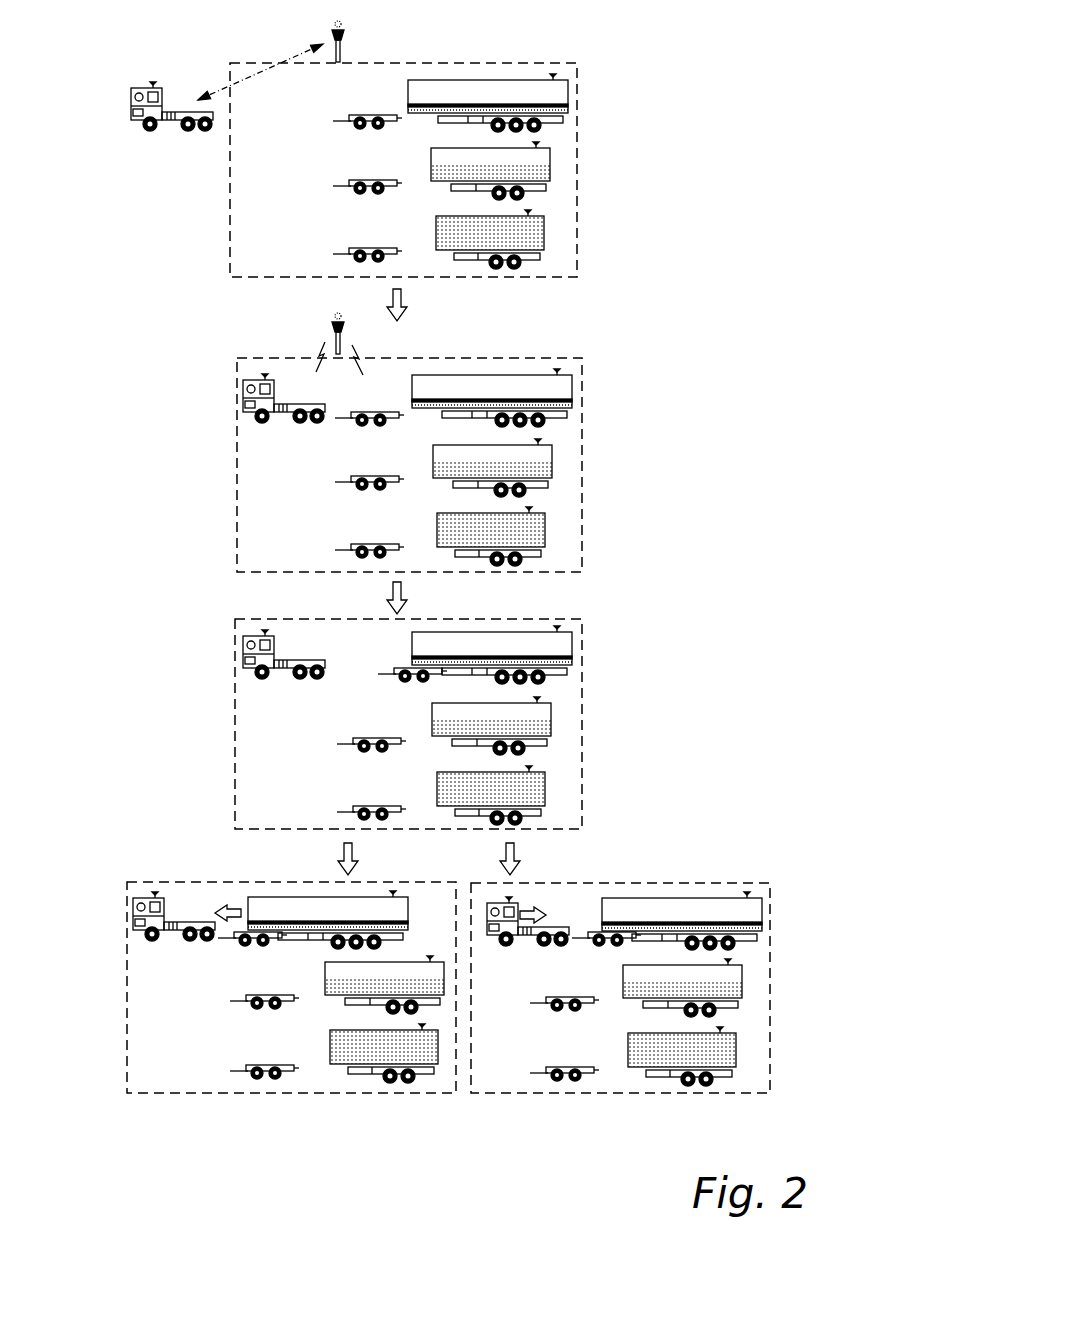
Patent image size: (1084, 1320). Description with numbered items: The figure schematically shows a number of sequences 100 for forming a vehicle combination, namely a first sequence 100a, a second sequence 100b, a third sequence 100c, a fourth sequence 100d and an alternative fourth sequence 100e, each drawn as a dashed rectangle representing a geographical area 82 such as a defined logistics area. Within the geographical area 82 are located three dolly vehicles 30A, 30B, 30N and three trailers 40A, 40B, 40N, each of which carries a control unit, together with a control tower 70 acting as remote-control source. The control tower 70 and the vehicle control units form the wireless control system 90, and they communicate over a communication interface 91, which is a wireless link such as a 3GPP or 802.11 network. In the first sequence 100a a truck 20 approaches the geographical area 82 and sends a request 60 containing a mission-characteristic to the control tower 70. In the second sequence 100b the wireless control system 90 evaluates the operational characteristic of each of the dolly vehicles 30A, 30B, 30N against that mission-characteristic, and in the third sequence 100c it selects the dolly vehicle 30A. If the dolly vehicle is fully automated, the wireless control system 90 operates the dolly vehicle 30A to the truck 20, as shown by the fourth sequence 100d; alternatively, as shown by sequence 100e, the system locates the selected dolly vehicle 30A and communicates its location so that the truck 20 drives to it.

The sequences for forming a vehicle combination 100 is at (611, 35).
The first sequence 100a is at (589, 75).
The second sequence 100b is at (591, 377).
The third sequence 100c is at (591, 635).
The fourth sequence 100d is at (169, 1105).
The alternative fourth sequence 100e is at (784, 888).
The truck 20 is at (172, 131).
The dolly vehicle 30A is at (352, 118).
The dolly vehicle 30B is at (360, 184).
The dolly vehicle 30N is at (360, 252).
The trailer 40A is at (565, 93).
The trailer 40B is at (545, 158).
The trailer 40N is at (542, 235).
The request 60 is at (270, 75).
The control tower 70 is at (347, 45).
The geographical area 82 is at (229, 62).
The wireless control system 90 is at (352, 358).
The communication interface 91 is at (339, 358).